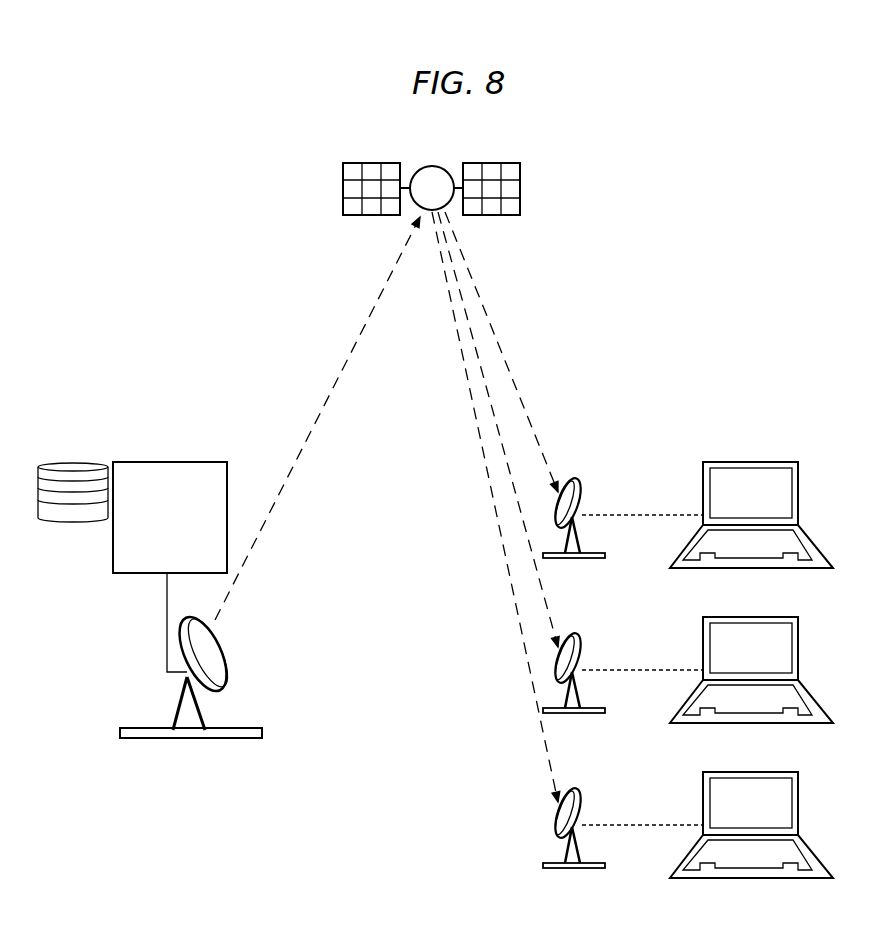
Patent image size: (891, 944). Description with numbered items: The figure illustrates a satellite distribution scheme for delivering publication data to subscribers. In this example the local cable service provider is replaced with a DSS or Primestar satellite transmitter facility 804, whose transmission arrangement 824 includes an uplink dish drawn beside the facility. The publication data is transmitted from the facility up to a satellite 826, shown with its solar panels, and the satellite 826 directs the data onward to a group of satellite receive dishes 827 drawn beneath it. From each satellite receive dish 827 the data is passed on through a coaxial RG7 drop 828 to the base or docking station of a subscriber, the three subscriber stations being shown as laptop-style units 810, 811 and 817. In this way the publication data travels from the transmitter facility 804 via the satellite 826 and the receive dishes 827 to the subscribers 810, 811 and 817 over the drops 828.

The satellite 826 is at (430, 173).
The transmission facility 824 is at (150, 576).
The satellite transmitter facility 804 is at (170, 517).
The satellite receive dish 827 is at (577, 476).
The coaxial RG7 drop 828 is at (643, 510).
The subscriber base or docking station 810 is at (800, 477).
The subscriber base or docking station 811 is at (800, 632).
The subscriber base or docking station 817 is at (800, 787).